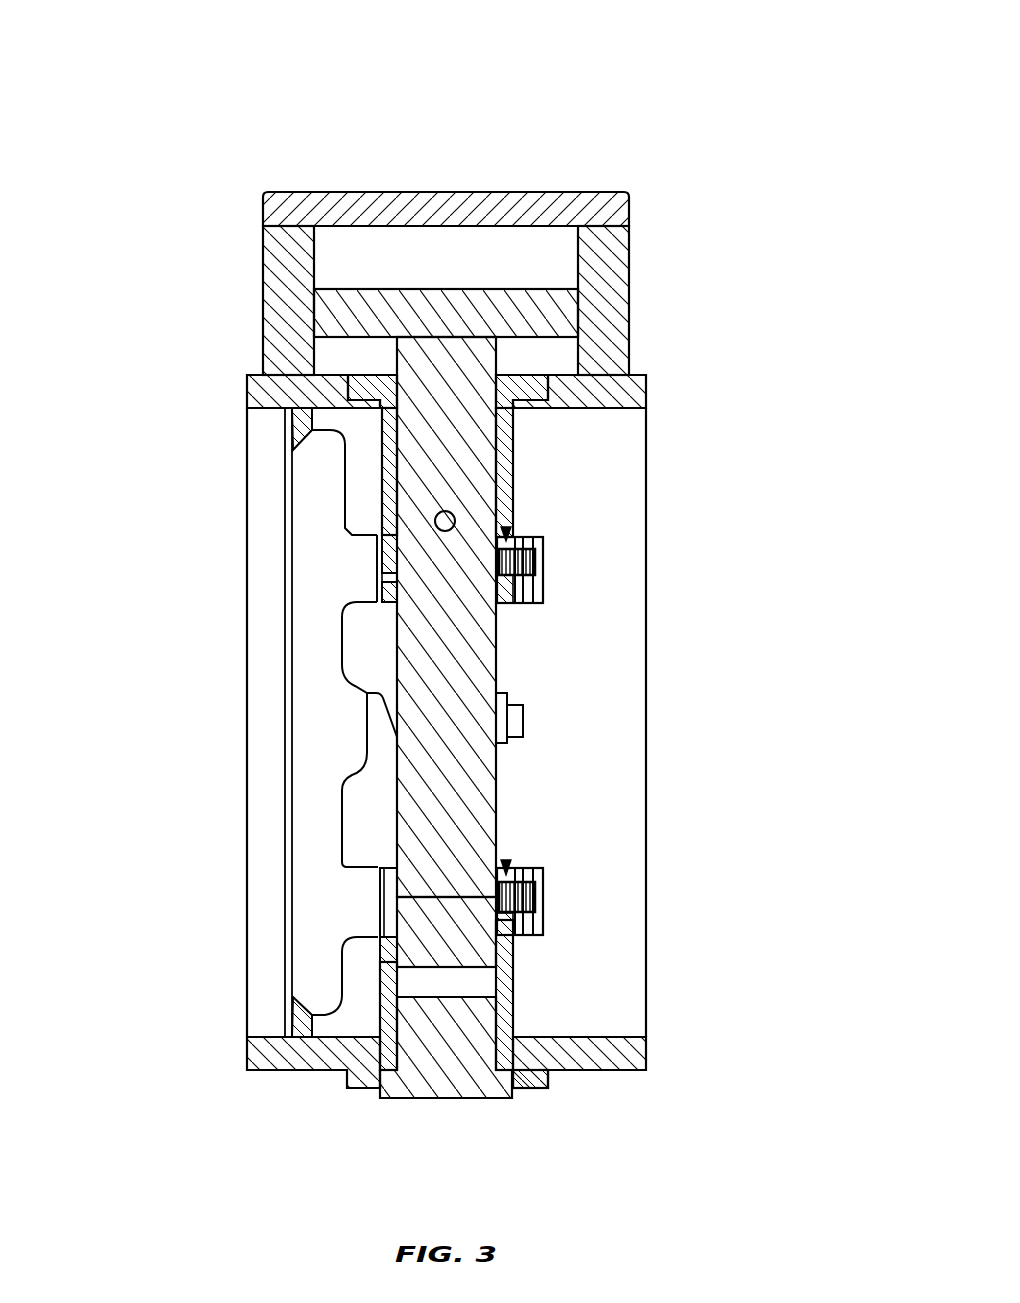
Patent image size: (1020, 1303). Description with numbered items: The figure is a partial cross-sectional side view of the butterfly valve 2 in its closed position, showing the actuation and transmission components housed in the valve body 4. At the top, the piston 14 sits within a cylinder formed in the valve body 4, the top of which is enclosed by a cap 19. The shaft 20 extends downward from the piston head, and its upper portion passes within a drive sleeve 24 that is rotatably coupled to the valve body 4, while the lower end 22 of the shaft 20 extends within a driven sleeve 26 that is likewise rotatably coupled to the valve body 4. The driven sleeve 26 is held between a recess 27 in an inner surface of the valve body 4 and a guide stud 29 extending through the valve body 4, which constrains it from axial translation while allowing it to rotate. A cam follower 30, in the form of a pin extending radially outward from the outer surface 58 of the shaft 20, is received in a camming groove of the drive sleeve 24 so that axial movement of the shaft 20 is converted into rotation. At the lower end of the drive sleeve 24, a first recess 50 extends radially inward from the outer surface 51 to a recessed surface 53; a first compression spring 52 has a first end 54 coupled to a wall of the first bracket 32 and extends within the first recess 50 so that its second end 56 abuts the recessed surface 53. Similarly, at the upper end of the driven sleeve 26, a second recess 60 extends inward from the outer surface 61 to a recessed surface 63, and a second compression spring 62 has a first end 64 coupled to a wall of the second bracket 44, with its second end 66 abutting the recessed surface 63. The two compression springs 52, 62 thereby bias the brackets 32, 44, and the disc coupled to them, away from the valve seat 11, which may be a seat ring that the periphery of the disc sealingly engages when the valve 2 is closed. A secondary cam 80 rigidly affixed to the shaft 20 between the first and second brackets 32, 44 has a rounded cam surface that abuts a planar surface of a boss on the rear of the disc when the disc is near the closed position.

The butterfly valve 2 is at (282, 125).
The valve body 4 is at (265, 388).
The valve seat 11 is at (297, 427).
The piston 14 is at (477, 307).
The cap 19 is at (381, 205).
The shaft 20 is at (432, 809).
The lower end of the shaft 22 is at (432, 962).
The drive sleeve 24 is at (385, 487).
The driven sleeve 26 is at (383, 1007).
The recess 27 is at (513, 1023).
The guide stud 29 is at (453, 1077).
The cam follower 30 is at (435, 521).
The first bracket 32 is at (522, 603).
The second bracket 44 is at (512, 933).
The first recess 50 is at (508, 532).
The outer surface of the drive sleeve 51 is at (513, 450).
The first compression spring 52 is at (533, 580).
The recessed surface of the drive sleeve 53 is at (497, 588).
The first end of the first compression spring 54 is at (537, 556).
The second end of the first compression spring 56 is at (497, 560).
The outer surface of the shaft 58 is at (497, 662).
The second recess 60 is at (508, 862).
The outer surface of the driven sleeve 61 is at (510, 1000).
The second compression spring 62 is at (533, 918).
The recessed surface of the driven sleeve 63 is at (497, 923).
The first end of the second compression spring 64 is at (537, 888).
The second end of the second compression spring 66 is at (497, 890).
The secondary cam 80 is at (378, 707).